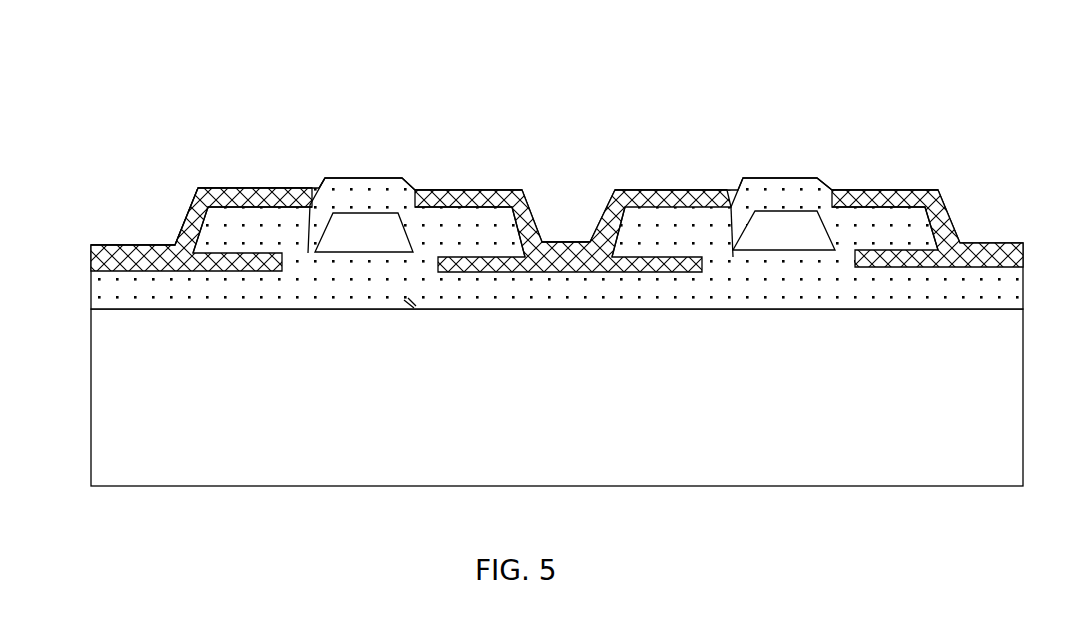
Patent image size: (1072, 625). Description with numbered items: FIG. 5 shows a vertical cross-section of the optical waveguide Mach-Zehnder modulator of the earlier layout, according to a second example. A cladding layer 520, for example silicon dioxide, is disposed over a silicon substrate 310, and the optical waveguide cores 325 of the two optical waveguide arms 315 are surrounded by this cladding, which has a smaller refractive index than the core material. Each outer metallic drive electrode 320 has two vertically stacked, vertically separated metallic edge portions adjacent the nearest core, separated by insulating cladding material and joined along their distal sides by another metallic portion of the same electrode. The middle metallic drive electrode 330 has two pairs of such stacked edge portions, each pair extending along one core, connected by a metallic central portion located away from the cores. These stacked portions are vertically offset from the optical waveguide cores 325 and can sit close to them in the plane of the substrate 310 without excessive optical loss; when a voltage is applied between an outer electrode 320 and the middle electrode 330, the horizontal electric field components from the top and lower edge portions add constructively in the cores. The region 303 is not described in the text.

The silicon substrate 310 is at (553, 435).
The cladding layer 520 is at (578, 303).
The interface 303 is at (411, 305).
The optical waveguide arm 315 is at (363, 99).
The outer metallic drive electrode 320 is at (212, 134).
The optical waveguide core 325 is at (356, 212).
The middle metallic drive electrode 330 is at (597, 111).